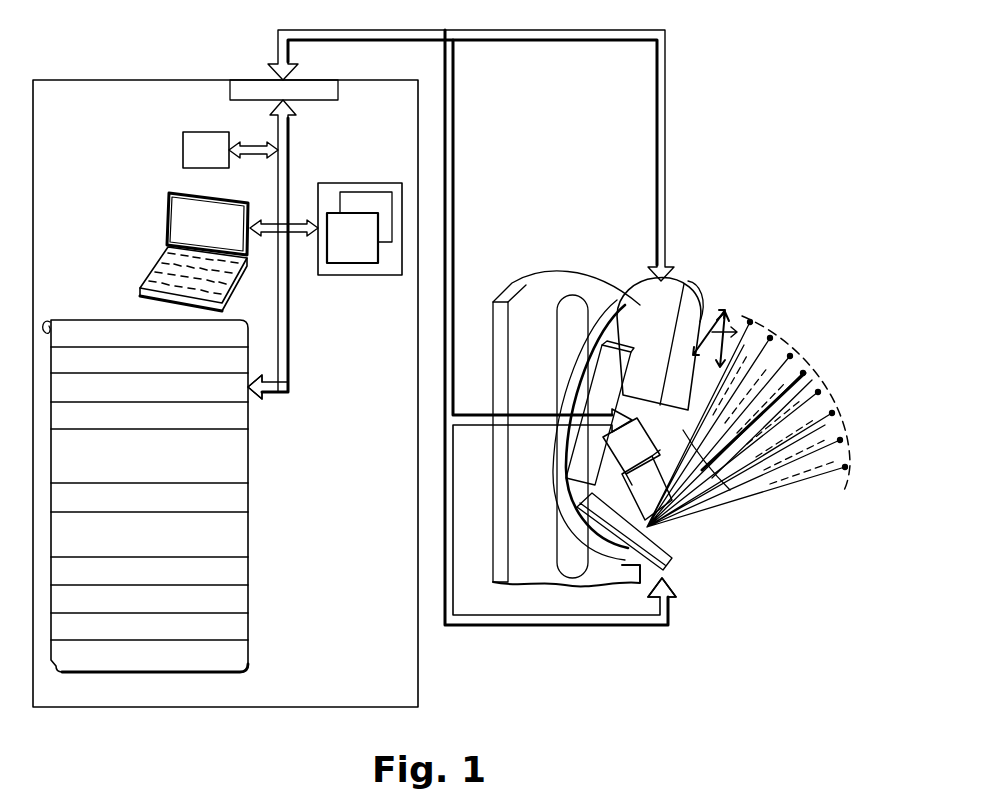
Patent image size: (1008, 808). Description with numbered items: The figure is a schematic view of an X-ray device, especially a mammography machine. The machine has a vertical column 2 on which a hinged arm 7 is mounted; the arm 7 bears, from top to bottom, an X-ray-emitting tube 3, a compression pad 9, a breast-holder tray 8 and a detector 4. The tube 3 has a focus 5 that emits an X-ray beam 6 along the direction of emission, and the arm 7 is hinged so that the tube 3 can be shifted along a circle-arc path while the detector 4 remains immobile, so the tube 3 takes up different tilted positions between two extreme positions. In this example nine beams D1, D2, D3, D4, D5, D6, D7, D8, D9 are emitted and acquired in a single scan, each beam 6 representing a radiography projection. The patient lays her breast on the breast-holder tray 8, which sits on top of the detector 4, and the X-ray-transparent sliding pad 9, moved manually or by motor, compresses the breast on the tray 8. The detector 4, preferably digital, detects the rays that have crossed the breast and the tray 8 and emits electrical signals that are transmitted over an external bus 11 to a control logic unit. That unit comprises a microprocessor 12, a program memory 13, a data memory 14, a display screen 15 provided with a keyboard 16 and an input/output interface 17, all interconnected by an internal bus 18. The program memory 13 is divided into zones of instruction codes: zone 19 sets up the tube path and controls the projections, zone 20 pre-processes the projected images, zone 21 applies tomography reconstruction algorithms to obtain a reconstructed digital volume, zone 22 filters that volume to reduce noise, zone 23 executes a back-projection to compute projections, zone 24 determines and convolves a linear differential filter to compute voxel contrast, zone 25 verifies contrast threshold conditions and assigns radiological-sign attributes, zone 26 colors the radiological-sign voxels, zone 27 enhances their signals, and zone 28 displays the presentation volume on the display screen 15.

The vertical column 2 is at (534, 299).
The X-ray-emitting tube 3 is at (689, 300).
The detector 4 is at (678, 565).
The focus 5 is at (735, 312).
The X-ray beam 6 is at (740, 316).
The hinged arm 7 is at (598, 382).
The breast-holder tray 8 is at (675, 548).
The compression pad 9 is at (576, 456).
The external bus 11 is at (540, 617).
The microprocessor 12 is at (183, 146).
The program memory 13 is at (178, 663).
The data memory 14 is at (371, 189).
The display screen 15 is at (190, 211).
The keyboard 16 is at (163, 268).
The input/output interface 17 is at (243, 90).
The internal bus 18 is at (286, 163).
The zone 19 is at (80, 322).
The zone 20 is at (170, 348).
The zone 21 is at (260, 378).
The zone 22 is at (243, 417).
The zone 23 is at (243, 445).
The zone 24 is at (243, 500).
The zone 25 is at (243, 527).
The zone 26 is at (240, 569).
The zone 27 is at (240, 603).
The zone 28 is at (240, 632).
The beam D1 is at (747, 478).
The beam D2 is at (780, 467).
The beam D3 is at (834, 413).
The beam D4 is at (820, 392).
The beam D5 is at (805, 373).
The beam D6 is at (792, 356).
The beam D7 is at (771, 338).
The beam D8 is at (752, 322).
The beam D9 is at (727, 474).